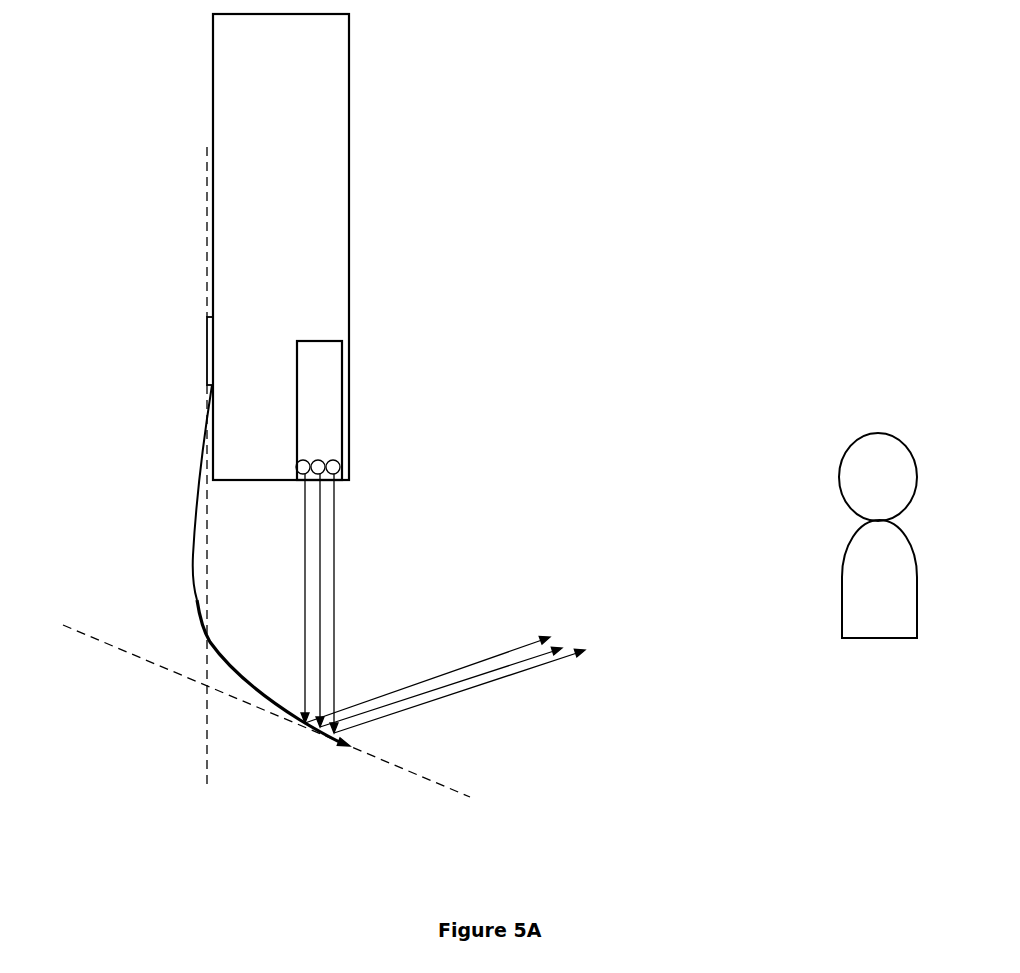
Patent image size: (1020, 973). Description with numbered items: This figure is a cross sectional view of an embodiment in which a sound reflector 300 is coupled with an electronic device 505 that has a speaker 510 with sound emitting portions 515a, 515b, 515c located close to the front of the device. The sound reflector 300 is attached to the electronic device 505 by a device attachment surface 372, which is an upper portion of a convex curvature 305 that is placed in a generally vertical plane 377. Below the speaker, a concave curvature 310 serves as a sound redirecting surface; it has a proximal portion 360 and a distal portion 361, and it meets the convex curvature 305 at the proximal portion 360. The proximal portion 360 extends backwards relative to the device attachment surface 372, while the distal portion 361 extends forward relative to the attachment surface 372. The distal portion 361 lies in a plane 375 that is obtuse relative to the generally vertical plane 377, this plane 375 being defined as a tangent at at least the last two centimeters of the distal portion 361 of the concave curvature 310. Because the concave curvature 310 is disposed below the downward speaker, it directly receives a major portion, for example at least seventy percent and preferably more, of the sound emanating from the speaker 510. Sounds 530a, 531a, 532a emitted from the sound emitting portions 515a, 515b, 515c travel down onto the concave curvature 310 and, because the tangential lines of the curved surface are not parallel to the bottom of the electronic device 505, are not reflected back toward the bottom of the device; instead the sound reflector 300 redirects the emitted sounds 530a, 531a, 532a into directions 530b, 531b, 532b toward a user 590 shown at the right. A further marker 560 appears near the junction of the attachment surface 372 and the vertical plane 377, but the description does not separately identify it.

The sound reflector 300 is at (150, 263).
The convex curvature 305 is at (203, 467).
The concave curvature 310 is at (281, 709).
The proximal portion 360 is at (193, 577).
The distal portion 361 is at (337, 747).
The device attachment surface 372 is at (207, 348).
The plane 375 is at (147, 660).
The generally vertical plane 377 is at (207, 750).
The electronic device 505 is at (349, 146).
The speaker 510 is at (342, 381).
The sound emitting portion 515a is at (299, 460).
The sound emitting portion 515b is at (335, 460).
The sound emitting portion 515c is at (341, 463).
The sound 530a is at (305, 522).
The sound 531a is at (322, 507).
The sound 532a is at (335, 495).
The direction 530b is at (493, 658).
The direction 531b is at (542, 655).
The direction 532b is at (563, 657).
The nominal edge position 560 is at (212, 317).
The user 590 is at (858, 433).